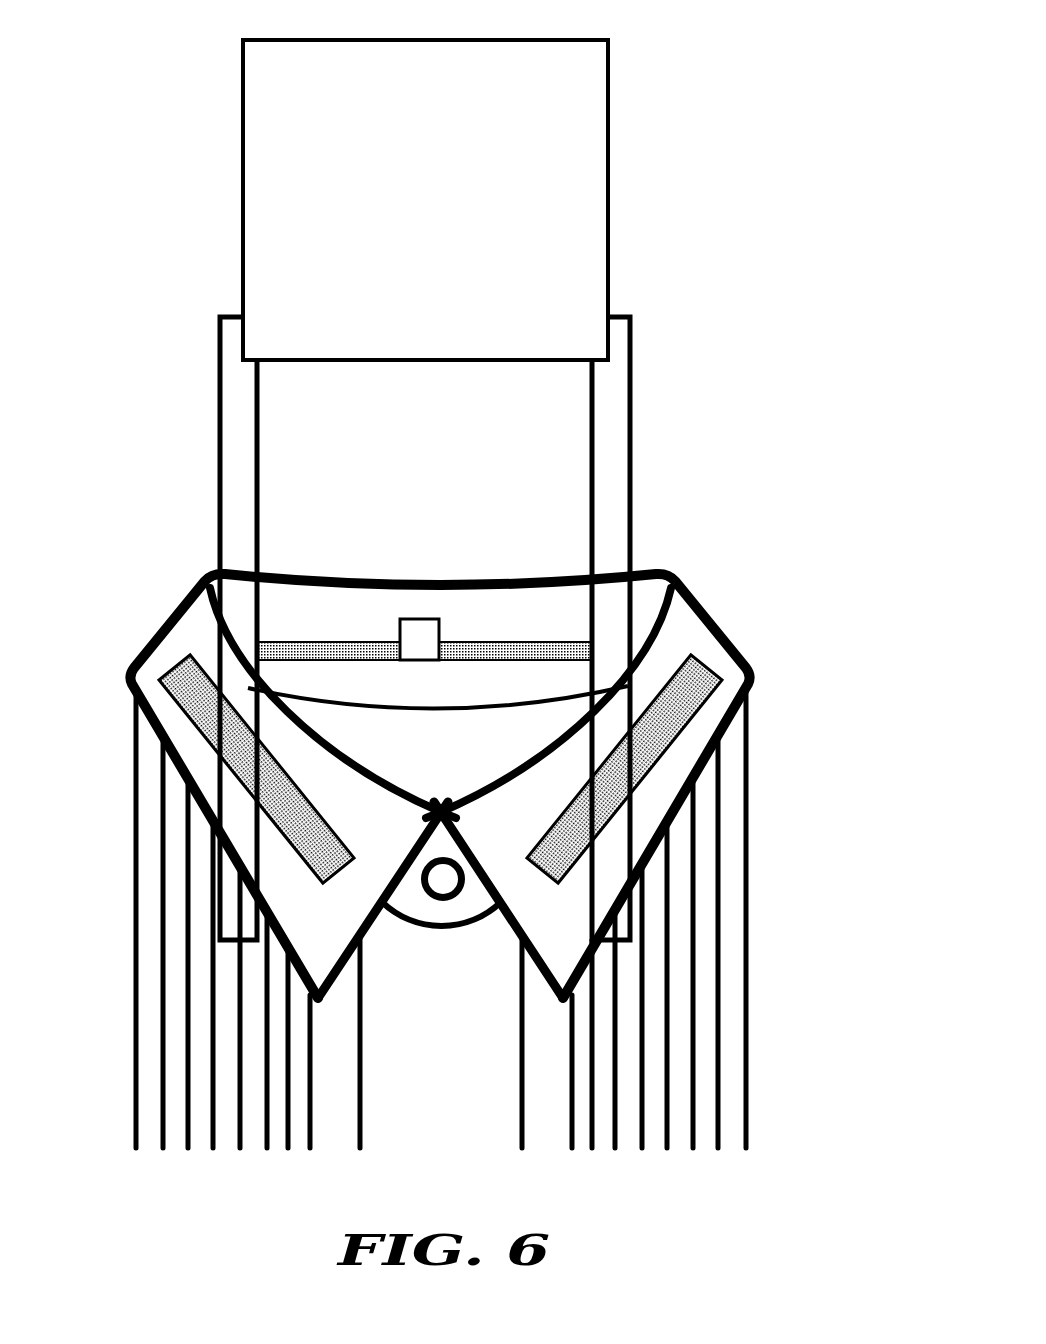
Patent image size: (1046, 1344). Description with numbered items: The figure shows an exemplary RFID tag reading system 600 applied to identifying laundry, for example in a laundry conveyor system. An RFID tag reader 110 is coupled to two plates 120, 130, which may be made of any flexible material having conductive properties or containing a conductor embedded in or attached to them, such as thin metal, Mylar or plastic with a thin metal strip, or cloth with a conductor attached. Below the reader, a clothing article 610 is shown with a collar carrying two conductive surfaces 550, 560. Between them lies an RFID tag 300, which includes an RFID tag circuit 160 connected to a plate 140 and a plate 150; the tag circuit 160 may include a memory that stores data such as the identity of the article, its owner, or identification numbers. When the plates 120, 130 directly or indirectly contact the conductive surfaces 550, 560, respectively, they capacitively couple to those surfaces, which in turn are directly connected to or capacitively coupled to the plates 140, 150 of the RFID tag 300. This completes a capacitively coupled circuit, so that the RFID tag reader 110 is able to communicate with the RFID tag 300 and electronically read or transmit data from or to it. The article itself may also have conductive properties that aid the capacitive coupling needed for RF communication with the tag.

The RFID tag reading system 600 is at (795, 28).
The RFID tag reader 110 is at (610, 98).
The plate 120 is at (631, 400).
The plate 130 is at (218, 398).
The plate 140 is at (567, 640).
The plate 150 is at (278, 640).
The RFID tag circuit 160 is at (417, 662).
The RFID tag 300 is at (425, 602).
The conductive surface 550 is at (677, 740).
The conductive surface 560 is at (207, 737).
The clothing article 610 is at (703, 970).